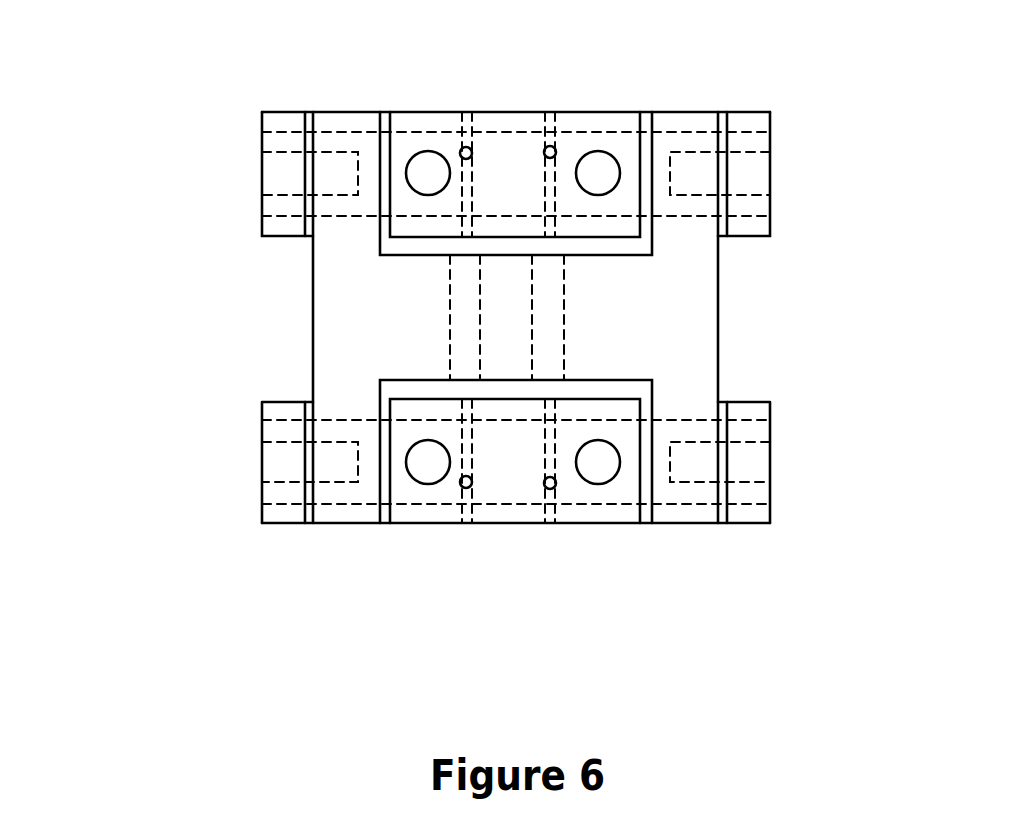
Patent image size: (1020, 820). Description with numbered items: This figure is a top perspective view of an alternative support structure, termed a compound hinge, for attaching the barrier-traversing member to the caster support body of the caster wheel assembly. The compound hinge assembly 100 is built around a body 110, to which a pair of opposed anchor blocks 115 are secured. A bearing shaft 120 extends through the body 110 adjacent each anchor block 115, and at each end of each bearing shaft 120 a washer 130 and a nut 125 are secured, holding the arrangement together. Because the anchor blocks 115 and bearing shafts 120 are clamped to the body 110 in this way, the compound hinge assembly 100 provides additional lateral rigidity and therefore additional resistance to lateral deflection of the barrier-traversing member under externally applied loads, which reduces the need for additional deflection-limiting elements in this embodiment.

The compound hinge assembly 100 is at (162, 192).
The body 110 is at (390, 323).
The anchor block 115 is at (507, 120).
The bearing shaft 120 is at (422, 132).
The nut 125 is at (285, 397).
The washer 130 is at (385, 112).